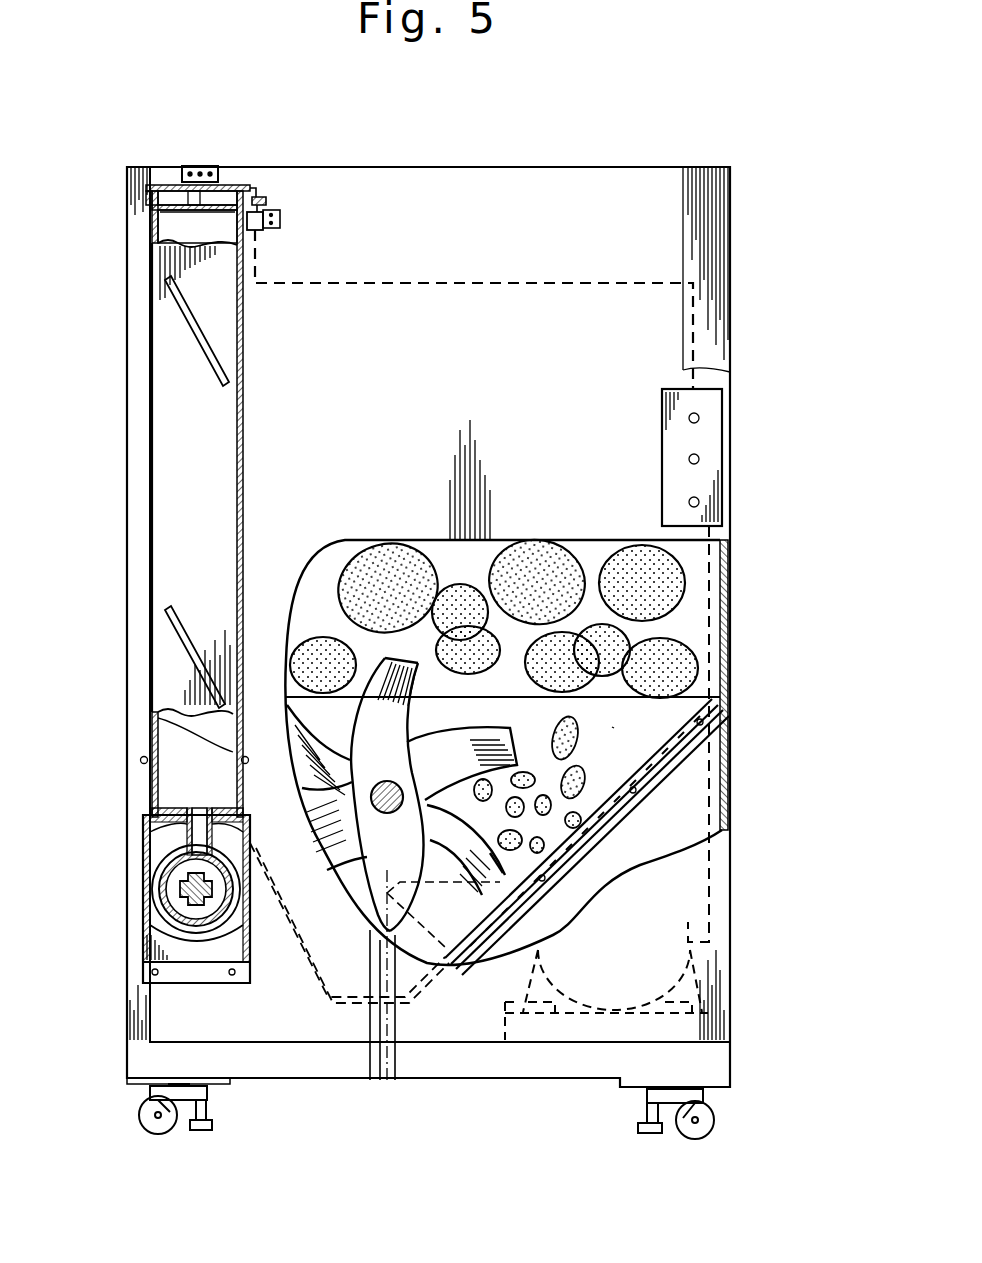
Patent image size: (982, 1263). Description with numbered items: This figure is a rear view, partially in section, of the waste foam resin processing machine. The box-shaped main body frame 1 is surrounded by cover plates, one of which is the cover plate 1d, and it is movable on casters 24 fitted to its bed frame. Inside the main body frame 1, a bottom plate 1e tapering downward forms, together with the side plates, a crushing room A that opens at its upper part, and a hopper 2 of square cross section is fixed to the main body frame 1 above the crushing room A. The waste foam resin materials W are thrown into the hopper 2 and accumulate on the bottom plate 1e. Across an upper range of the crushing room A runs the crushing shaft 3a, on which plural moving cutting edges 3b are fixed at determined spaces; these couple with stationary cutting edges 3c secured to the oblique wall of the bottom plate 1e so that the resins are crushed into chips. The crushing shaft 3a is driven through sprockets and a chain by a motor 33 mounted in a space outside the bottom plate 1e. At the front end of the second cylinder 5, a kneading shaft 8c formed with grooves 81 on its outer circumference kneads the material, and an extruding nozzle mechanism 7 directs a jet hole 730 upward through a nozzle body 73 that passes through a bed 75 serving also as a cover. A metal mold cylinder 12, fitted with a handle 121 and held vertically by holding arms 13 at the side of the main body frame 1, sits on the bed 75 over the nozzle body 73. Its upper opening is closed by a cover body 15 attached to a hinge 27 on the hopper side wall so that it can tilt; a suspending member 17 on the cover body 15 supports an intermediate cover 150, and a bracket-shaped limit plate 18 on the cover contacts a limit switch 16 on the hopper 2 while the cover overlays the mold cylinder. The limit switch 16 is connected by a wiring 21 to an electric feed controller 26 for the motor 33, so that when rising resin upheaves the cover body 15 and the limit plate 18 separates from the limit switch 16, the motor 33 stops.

The main body frame 1 is at (735, 1010).
The cover plate 1d is at (690, 238).
The bottom plate 1e is at (655, 780).
The hopper 2 is at (706, 335).
The crushing shaft 3a is at (387, 813).
The moving cutting edges 3b is at (456, 733).
The stationary cutting edges 3c is at (423, 920).
The second cylinder 5 is at (167, 867).
The extruding nozzle mechanism 7 is at (177, 840).
The kneading shaft 8c is at (180, 897).
The metal mold cylinder 12 is at (175, 572).
The holding arms 13 is at (143, 757).
The cover body 15 is at (225, 187).
The limit switch 16 is at (265, 213).
The suspending member 17 is at (192, 208).
The limit plate 18 is at (260, 197).
The wiring 21 is at (523, 283).
The casters 24 is at (140, 1115).
The electric feed controller 26 is at (712, 450).
The hinge 27 is at (197, 165).
The motor 33 is at (685, 958).
The nozzle body 73 is at (177, 832).
The bed 75 is at (200, 958).
The grooves 81 is at (143, 927).
The handle 121 is at (195, 352).
The intermediate cover 150 is at (188, 218).
The jet hole 730 is at (197, 807).
The crushing room A is at (612, 727).
The waste foam resin materials W is at (670, 578).